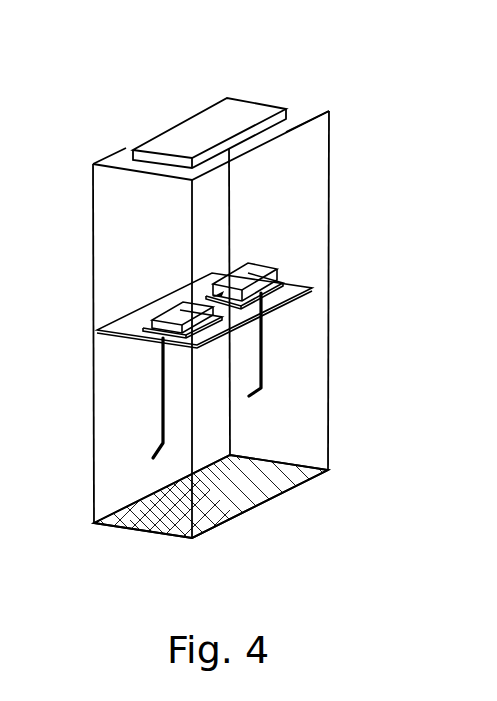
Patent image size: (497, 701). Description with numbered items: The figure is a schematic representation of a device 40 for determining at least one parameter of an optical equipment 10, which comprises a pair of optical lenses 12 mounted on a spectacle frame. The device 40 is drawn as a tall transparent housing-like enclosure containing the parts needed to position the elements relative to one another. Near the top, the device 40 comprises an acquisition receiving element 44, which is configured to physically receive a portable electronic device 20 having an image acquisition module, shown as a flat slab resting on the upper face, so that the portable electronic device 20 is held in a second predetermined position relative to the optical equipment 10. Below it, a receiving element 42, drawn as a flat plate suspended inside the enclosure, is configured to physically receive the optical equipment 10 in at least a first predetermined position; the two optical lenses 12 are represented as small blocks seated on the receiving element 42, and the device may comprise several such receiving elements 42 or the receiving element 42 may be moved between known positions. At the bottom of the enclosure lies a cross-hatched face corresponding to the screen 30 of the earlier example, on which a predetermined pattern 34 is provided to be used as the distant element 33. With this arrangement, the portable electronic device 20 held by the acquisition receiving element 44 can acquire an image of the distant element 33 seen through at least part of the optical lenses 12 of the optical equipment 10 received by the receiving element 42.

The optical equipment 10 is at (275, 337).
The optical lenses 12 is at (241, 275).
The portable electronic device 20 is at (239, 114).
The screen 30 is at (143, 528).
The distant element 33 is at (228, 527).
The predetermined pattern 34 is at (255, 492).
The device 40 is at (345, 217).
The receiving element 42 is at (123, 333).
The acquisition receiving element 44 is at (117, 168).